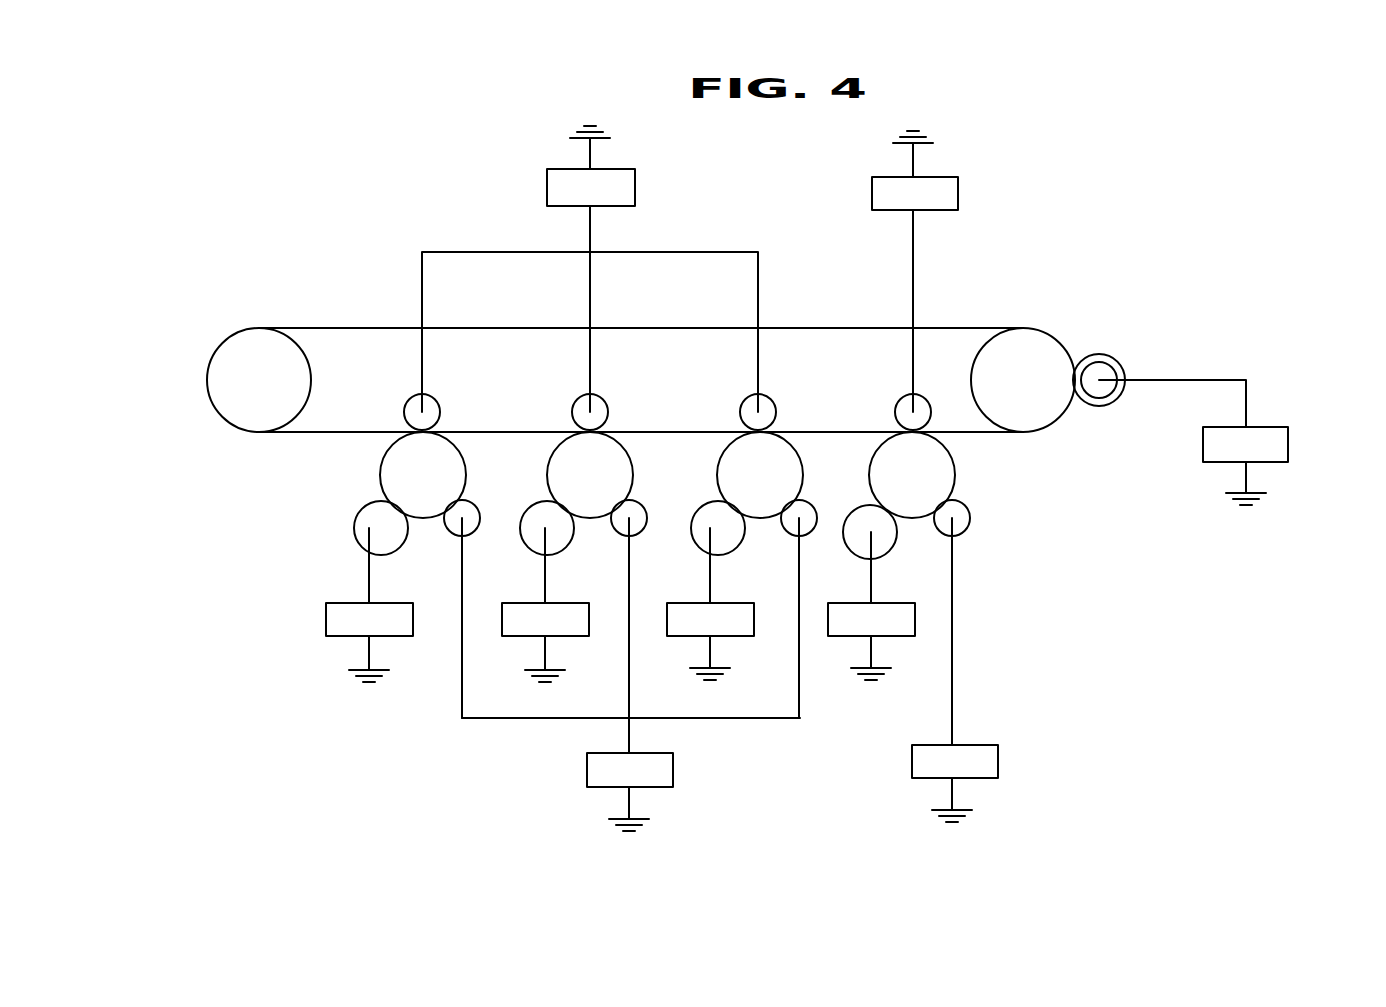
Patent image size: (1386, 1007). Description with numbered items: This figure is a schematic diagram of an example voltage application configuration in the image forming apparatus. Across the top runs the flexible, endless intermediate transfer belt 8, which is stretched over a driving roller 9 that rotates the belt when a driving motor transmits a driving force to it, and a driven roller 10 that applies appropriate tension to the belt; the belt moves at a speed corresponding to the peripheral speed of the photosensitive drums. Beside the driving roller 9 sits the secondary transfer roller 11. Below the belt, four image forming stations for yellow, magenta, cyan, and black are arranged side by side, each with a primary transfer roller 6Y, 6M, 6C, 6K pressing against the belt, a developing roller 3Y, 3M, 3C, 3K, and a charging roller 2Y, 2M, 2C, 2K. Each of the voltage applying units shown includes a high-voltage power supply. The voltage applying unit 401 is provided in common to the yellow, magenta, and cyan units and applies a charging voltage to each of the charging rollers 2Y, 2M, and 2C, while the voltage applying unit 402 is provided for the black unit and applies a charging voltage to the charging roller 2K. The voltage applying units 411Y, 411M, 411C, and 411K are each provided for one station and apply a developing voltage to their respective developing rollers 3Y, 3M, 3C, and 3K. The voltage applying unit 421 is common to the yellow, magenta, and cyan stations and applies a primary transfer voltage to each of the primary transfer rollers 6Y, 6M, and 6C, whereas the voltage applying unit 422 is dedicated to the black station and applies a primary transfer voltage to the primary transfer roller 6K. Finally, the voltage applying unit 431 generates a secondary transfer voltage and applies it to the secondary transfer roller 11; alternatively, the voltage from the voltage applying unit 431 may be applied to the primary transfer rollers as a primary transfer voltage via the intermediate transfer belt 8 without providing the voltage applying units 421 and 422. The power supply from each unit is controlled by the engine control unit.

The intermediate transfer belt 8 is at (488, 327).
The driving roller 9 is at (1052, 407).
The driven roller 10 is at (208, 372).
The secondary transfer roller 11 is at (1118, 397).
The voltage applying unit 431 is at (1288, 443).
The primary transfer roller 6Y is at (410, 402).
The primary transfer roller 6M is at (578, 402).
The primary transfer roller 6C is at (746, 402).
The primary transfer roller 6K is at (901, 402).
The voltage applying unit 421 is at (547, 184).
The voltage applying unit 422 is at (872, 191).
The developing roller 3Y is at (362, 511).
The developing roller 3M is at (528, 511).
The developing roller 3C is at (701, 512).
The developing roller 3K is at (858, 515).
The voltage applying unit 411Y is at (348, 603).
The voltage applying unit 411M is at (523, 603).
The voltage applying unit 411C is at (688, 603).
The voltage applying unit 411K is at (850, 603).
The charging roller 2Y is at (449, 526).
The charging roller 2M is at (614, 527).
The charging roller 2C is at (786, 527).
The charging roller 2K is at (940, 527).
The voltage applying unit 401 is at (587, 768).
The voltage applying unit 402 is at (912, 758).